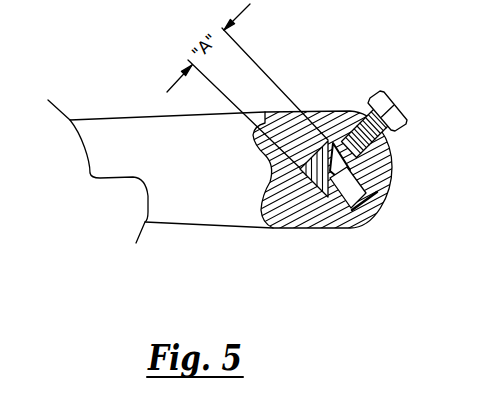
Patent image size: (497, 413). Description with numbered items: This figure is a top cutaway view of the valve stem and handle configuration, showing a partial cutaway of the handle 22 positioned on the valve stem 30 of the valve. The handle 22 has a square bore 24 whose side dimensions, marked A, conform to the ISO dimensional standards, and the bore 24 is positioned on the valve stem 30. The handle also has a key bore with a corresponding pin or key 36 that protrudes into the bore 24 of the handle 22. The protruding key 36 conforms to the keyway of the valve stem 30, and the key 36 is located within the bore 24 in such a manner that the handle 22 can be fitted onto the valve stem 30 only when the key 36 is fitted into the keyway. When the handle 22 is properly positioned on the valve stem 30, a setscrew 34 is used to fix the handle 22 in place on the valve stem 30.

The handle 22 is at (147, 140).
The square bore 24 is at (322, 180).
The valve stem 30 is at (326, 203).
The setscrew 34 is at (390, 108).
The key 36 is at (376, 192).